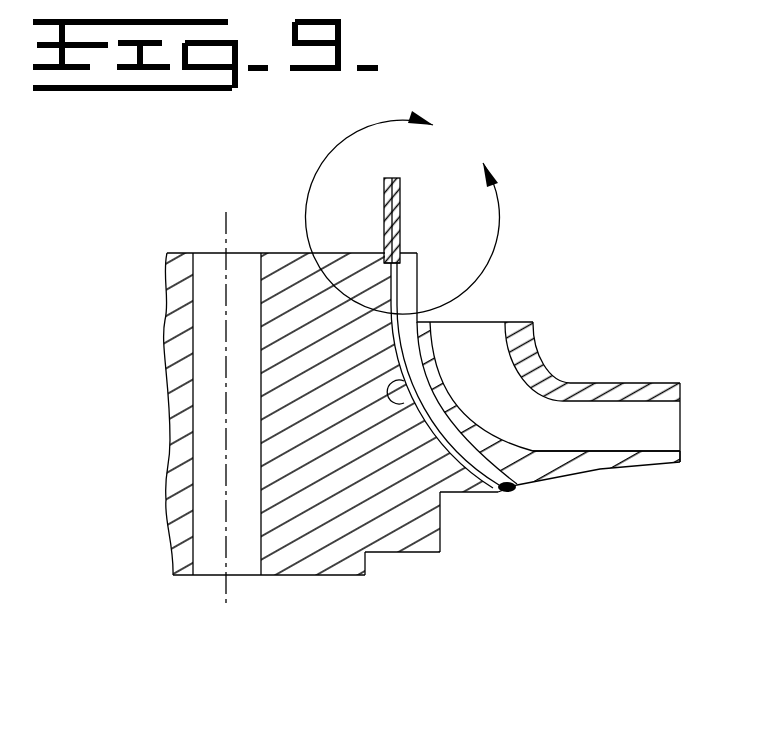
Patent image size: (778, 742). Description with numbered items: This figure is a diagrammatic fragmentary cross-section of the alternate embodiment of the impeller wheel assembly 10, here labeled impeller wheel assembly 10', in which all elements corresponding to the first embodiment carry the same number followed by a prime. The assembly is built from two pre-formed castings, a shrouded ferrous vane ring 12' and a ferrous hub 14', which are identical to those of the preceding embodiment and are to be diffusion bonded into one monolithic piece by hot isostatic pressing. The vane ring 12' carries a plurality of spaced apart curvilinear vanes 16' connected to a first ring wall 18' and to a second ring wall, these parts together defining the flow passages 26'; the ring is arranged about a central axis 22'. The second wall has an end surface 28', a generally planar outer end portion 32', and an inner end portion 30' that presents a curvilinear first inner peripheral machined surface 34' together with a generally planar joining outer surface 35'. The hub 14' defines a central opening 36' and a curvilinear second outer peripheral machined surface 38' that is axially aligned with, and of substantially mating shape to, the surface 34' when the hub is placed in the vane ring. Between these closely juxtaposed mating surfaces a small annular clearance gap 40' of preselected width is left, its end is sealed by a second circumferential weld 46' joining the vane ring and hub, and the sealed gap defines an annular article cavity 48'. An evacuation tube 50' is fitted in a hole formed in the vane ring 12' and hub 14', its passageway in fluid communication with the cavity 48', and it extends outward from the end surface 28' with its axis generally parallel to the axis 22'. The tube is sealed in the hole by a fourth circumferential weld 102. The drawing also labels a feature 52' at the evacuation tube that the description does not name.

The impeller wheel assembly 10 is at (402, 212).
The impeller wheel assembly 10' is at (592, 148).
The vane ring 12' is at (592, 384).
The hub 14' is at (331, 466).
The vanes 16' is at (503, 406).
The first ring wall 18' is at (623, 361).
The central axis 22' is at (253, 374).
The flow passages 26' is at (548, 435).
The end surface 28' is at (425, 252).
The inner end portion 30' is at (471, 287).
The outer end portion 32' is at (617, 484).
The first inner peripheral machined surface 34' is at (440, 375).
The joining outer surface 35' is at (501, 427).
The central opening 36' is at (269, 612).
The second outer peripheral machined surface 38' is at (477, 506).
The annular clearance gap 40' is at (472, 524).
The second circumferential weld 46' is at (548, 556).
The annular article cavity 48' is at (411, 521).
The evacuation tube 50' is at (481, 233).
The pin 52' is at (363, 220).
The fourth circumferential weld 102 is at (385, 250).